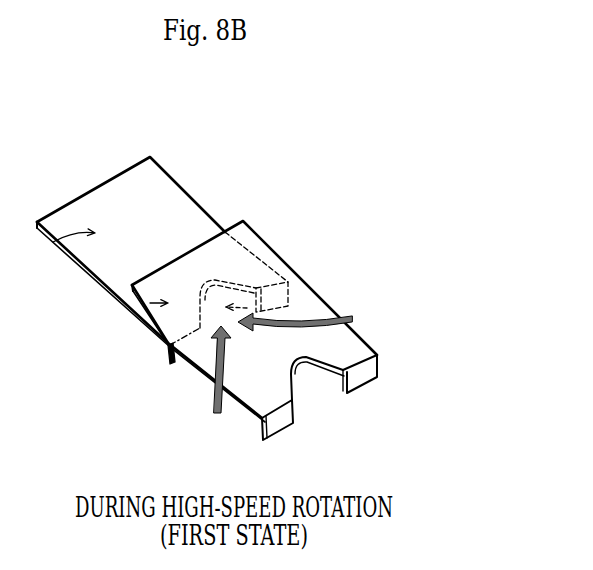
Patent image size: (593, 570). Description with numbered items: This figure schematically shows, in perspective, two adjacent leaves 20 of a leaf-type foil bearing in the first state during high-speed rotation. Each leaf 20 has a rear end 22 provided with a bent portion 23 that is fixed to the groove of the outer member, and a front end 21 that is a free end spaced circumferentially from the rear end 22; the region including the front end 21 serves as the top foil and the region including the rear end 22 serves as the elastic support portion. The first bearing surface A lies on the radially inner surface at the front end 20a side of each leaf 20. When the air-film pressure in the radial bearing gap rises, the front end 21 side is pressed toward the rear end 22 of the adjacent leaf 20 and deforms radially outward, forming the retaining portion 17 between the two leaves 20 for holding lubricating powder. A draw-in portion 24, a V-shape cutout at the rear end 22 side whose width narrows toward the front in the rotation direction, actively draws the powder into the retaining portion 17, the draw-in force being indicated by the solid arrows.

The leaf 20 is at (227, 296).
The front end side 20a is at (120, 233).
The front end 21 is at (47, 228).
The rear end 22 is at (345, 348).
The bent portion 23 is at (180, 366).
The draw-in portion 24 is at (257, 287).
The retaining portion 17 is at (290, 281).